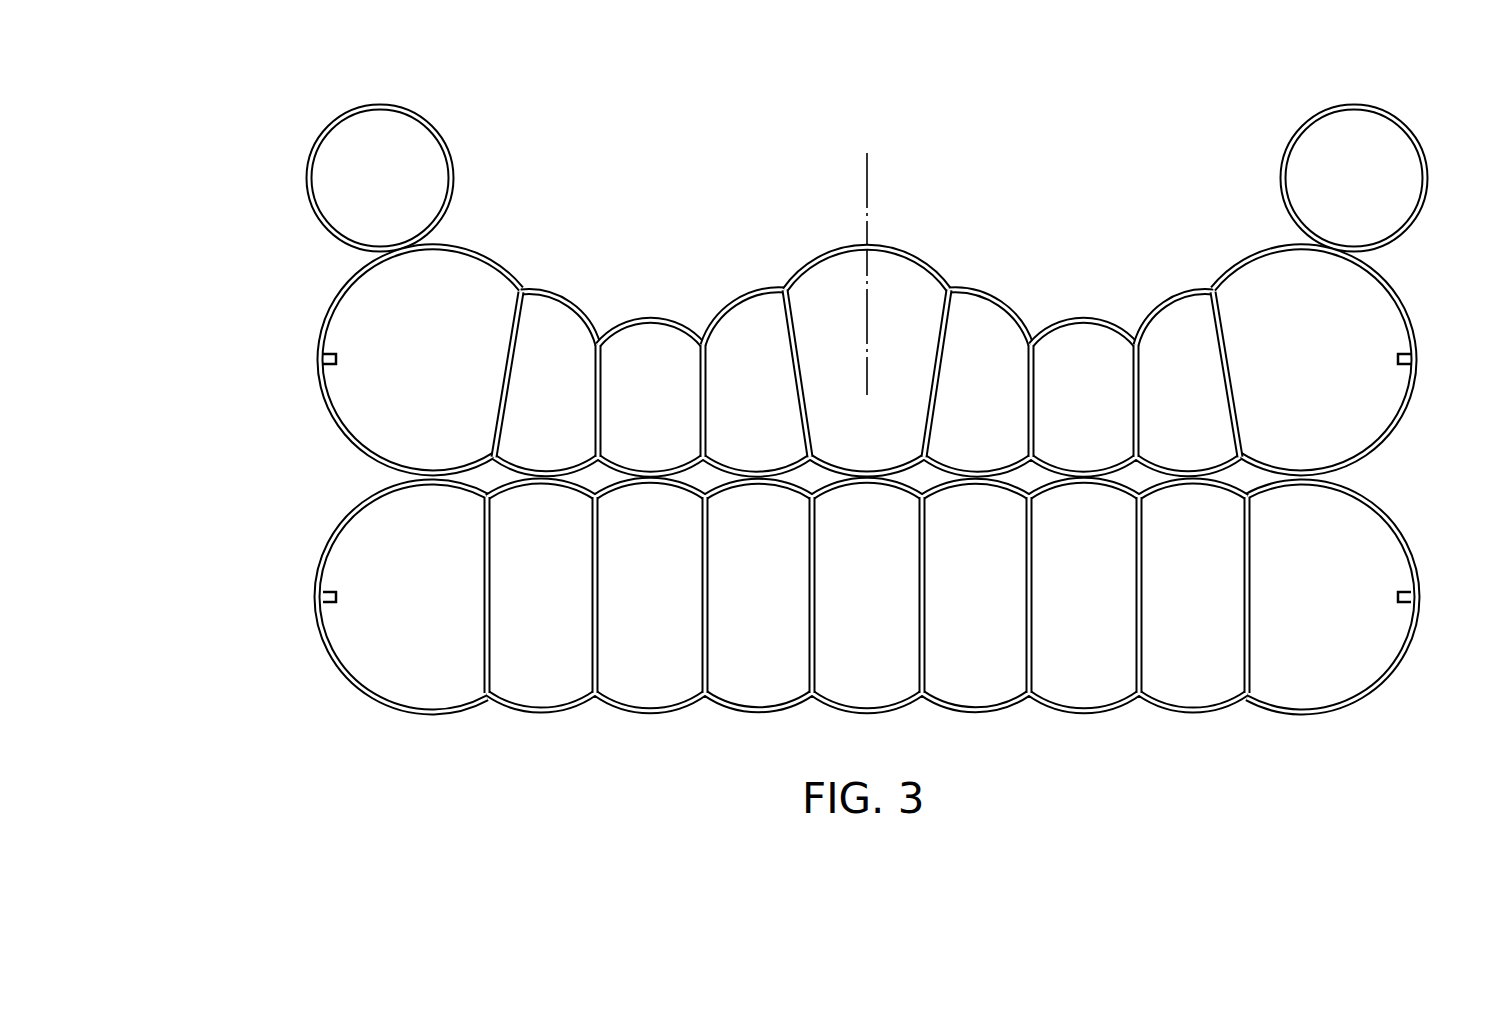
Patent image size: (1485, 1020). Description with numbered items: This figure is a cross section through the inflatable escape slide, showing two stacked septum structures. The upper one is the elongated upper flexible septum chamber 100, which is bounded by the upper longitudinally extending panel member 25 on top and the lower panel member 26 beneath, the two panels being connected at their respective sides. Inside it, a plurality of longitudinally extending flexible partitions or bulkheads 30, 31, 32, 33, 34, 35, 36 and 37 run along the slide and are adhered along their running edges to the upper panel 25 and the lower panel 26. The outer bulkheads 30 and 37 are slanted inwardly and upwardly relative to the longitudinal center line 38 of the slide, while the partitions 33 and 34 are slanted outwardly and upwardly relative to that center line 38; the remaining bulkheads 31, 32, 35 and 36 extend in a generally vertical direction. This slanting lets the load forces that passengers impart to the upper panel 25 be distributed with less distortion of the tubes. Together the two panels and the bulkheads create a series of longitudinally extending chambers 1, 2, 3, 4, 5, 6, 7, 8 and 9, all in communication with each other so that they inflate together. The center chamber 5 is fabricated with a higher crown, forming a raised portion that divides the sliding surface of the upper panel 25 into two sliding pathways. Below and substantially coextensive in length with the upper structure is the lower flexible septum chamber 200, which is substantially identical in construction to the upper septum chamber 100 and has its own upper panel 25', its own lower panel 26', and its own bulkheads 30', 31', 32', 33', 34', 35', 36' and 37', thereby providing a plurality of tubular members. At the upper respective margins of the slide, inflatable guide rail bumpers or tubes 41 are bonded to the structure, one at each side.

The chamber 1 is at (428, 341).
The chamber 2 is at (556, 363).
The chamber 3 is at (659, 391).
The chamber 4 is at (757, 361).
The center chamber 5 is at (893, 361).
The chamber 6 is at (987, 361).
The chamber 7 is at (1091, 391).
The chamber 8 is at (1189, 361).
The chamber 9 is at (1320, 344).
The upper panel member 25 is at (867, 345).
The upper panel 25' is at (853, 582).
The lower panel member 26 is at (834, 509).
The lower panel 26' is at (862, 739).
The bulkhead 30 is at (468, 374).
The bulkhead 31 is at (559, 401).
The bulkhead 32 is at (664, 401).
The partition 33 is at (772, 373).
The partition 34 is at (957, 373).
The bulkhead 35 is at (1069, 401).
The bulkhead 36 is at (1167, 401).
The bulkhead 37 is at (1263, 374).
The bulkhead 30' is at (444, 595).
The bulkhead 31' is at (555, 595).
The bulkhead 32' is at (665, 595).
The bulkhead 33' is at (774, 595).
The bulkhead 34' is at (958, 595).
The bulkhead 35' is at (1064, 595).
The bulkhead 36' is at (1173, 595).
The bulkhead 37' is at (1284, 595).
The center line 38 is at (868, 193).
The inflatable guide rail bumper 41 is at (417, 113).
The upper flexible septum chamber 100 is at (303, 328).
The lower flexible septum chamber 200 is at (303, 546).